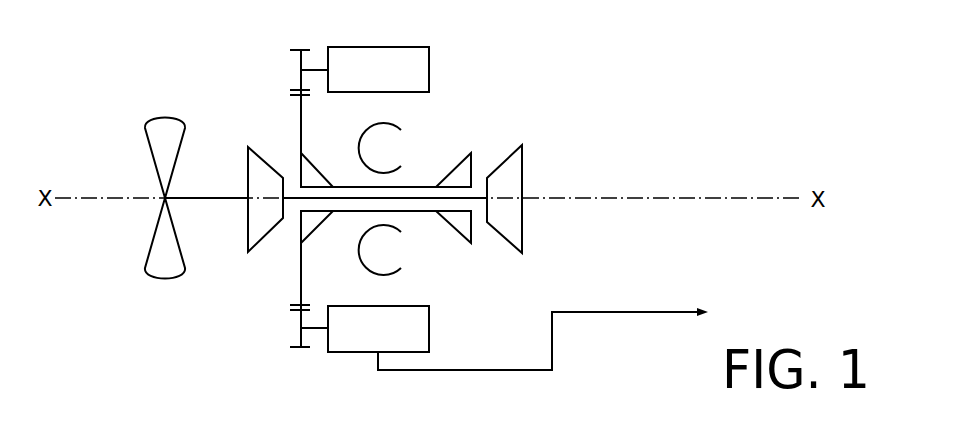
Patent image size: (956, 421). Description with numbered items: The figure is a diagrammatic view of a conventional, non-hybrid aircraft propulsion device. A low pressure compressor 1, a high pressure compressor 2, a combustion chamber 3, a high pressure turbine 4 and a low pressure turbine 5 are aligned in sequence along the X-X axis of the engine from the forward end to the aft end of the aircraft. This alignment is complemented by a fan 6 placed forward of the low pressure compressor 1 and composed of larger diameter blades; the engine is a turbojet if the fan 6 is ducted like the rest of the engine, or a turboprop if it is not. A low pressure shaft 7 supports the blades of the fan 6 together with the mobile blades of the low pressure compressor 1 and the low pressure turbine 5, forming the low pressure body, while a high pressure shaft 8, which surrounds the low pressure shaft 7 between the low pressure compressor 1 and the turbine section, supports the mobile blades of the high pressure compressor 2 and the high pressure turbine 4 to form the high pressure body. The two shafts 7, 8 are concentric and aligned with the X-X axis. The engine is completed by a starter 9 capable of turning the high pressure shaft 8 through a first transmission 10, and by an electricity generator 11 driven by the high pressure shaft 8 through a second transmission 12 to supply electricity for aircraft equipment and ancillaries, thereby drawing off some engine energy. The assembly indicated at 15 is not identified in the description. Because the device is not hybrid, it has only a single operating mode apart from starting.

The low pressure compressor 1 is at (266, 170).
The high pressure compressor 2 is at (305, 222).
The combustion chamber 3 is at (378, 147).
The high pressure turbine 4 is at (457, 222).
The low pressure turbine 5 is at (508, 178).
The fan 6 is at (155, 252).
The low pressure shaft 7 is at (212, 197).
The high pressure shaft 8 is at (358, 211).
The starter 9 is at (369, 82).
The first transmission 10 is at (277, 76).
The electricity generator 11 is at (366, 340).
The second transmission 12 is at (264, 328).
The electrical machine 15 is at (532, 110).